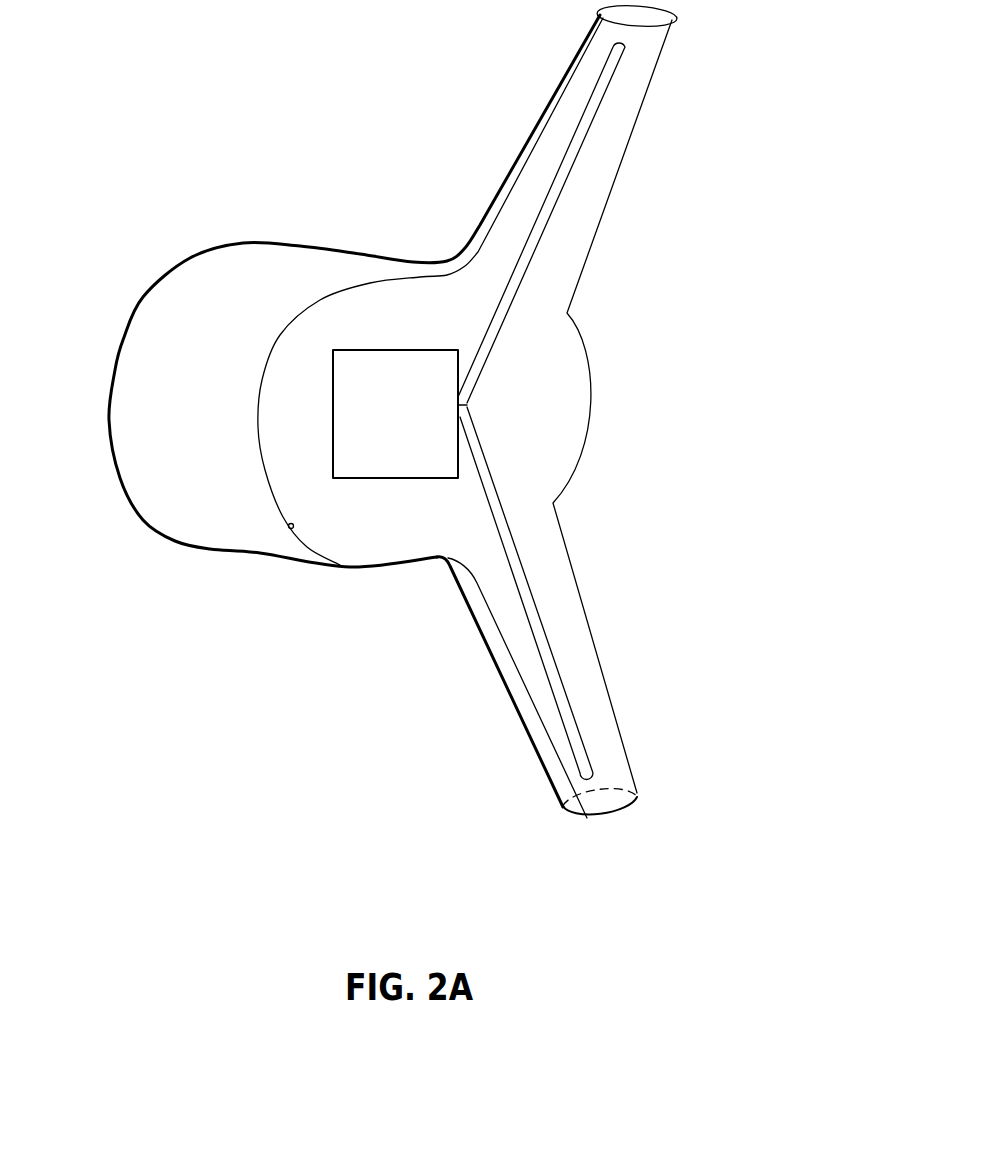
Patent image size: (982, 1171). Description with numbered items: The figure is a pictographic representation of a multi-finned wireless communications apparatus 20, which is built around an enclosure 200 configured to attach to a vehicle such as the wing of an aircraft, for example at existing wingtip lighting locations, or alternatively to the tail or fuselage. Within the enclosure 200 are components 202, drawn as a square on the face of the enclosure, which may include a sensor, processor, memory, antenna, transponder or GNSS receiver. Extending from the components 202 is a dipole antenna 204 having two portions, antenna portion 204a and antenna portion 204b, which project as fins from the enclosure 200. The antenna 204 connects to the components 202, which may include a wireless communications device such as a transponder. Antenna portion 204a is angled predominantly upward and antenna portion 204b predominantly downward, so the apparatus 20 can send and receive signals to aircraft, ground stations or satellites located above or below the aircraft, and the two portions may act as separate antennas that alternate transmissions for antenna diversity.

The multi-finned wireless communications apparatus 20 is at (174, 790).
The enclosure 200 is at (165, 328).
The components 202 is at (392, 418).
The dipole antenna 204 is at (505, 532).
The antenna portion 204a is at (578, 132).
The antenna portion 204b is at (518, 580).